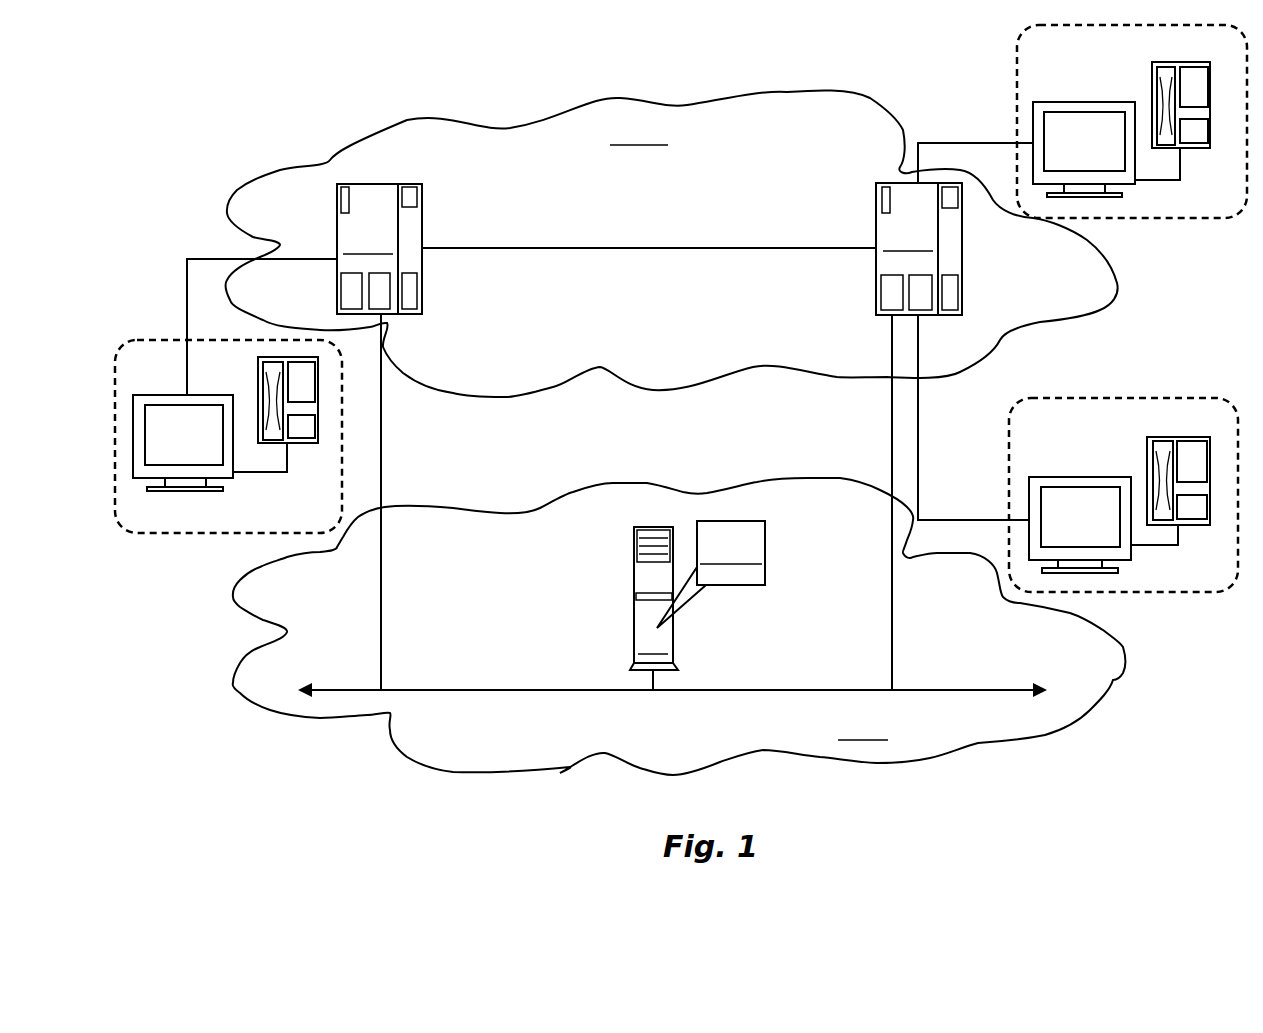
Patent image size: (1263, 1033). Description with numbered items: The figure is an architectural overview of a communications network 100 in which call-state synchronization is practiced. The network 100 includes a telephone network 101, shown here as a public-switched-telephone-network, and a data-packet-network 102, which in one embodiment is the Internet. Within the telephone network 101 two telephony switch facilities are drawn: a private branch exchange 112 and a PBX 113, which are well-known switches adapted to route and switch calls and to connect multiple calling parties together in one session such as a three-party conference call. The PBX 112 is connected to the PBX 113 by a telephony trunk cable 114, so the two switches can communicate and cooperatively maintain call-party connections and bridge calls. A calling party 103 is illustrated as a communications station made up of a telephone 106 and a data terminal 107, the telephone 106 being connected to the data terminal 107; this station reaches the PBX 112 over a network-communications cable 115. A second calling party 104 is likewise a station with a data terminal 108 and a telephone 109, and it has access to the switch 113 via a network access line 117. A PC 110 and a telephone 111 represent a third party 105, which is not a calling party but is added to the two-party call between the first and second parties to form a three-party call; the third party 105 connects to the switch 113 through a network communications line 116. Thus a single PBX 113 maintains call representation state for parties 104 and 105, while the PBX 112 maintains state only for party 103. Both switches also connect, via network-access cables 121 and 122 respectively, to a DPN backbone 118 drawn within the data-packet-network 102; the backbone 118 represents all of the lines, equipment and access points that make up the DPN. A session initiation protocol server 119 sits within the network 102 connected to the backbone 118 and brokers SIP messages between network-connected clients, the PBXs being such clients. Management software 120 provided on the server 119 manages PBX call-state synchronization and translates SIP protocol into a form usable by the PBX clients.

The communications network 100 is at (184, 147).
The telephone network 101 is at (509, 110).
The data-packet-network 102 is at (570, 480).
The calling party 103 is at (171, 333).
The second calling party 104 is at (1002, 84).
The third party 105 is at (1162, 604).
The telephone 106 is at (310, 443).
The data terminal 107 is at (210, 490).
The data terminal 108 is at (1108, 100).
The telephone 109 is at (1200, 150).
The PC 110 is at (1094, 475).
The telephone 111 is at (1198, 527).
The private branch exchange 112 is at (422, 227).
The PBX 113 is at (876, 262).
The telephony trunk cable 114 is at (657, 250).
The network-communications cable 115 is at (186, 278).
The network communications line 116 is at (919, 460).
The network access line 117 is at (975, 142).
The DPN backbone 118 is at (530, 692).
The session initiation protocol server 119 is at (633, 615).
The management software 120 is at (776, 553).
The network-access cable 121 is at (382, 613).
The network-access cable 122 is at (891, 575).